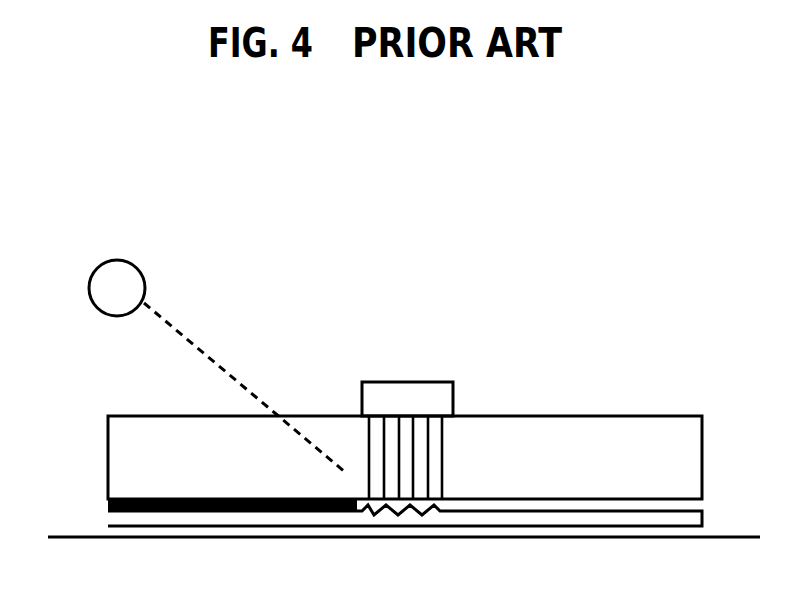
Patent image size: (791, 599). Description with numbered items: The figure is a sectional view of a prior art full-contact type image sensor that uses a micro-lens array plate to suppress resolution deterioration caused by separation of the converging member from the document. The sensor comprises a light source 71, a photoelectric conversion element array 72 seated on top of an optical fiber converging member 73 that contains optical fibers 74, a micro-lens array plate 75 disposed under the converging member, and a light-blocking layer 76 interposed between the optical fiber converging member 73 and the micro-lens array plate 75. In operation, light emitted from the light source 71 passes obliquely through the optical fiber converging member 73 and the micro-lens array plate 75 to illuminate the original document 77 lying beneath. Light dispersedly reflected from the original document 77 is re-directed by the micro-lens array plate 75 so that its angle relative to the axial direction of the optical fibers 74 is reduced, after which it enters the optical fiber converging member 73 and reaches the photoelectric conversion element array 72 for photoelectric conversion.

The light source 71 is at (118, 277).
The photoelectric conversion element array 72 is at (408, 400).
The optical fiber converging member 73 is at (621, 440).
The optical fibers 74 is at (433, 458).
The micro-lens array plate 75 is at (98, 515).
The light-blocking layer 76 is at (230, 513).
The original document 77 is at (567, 540).